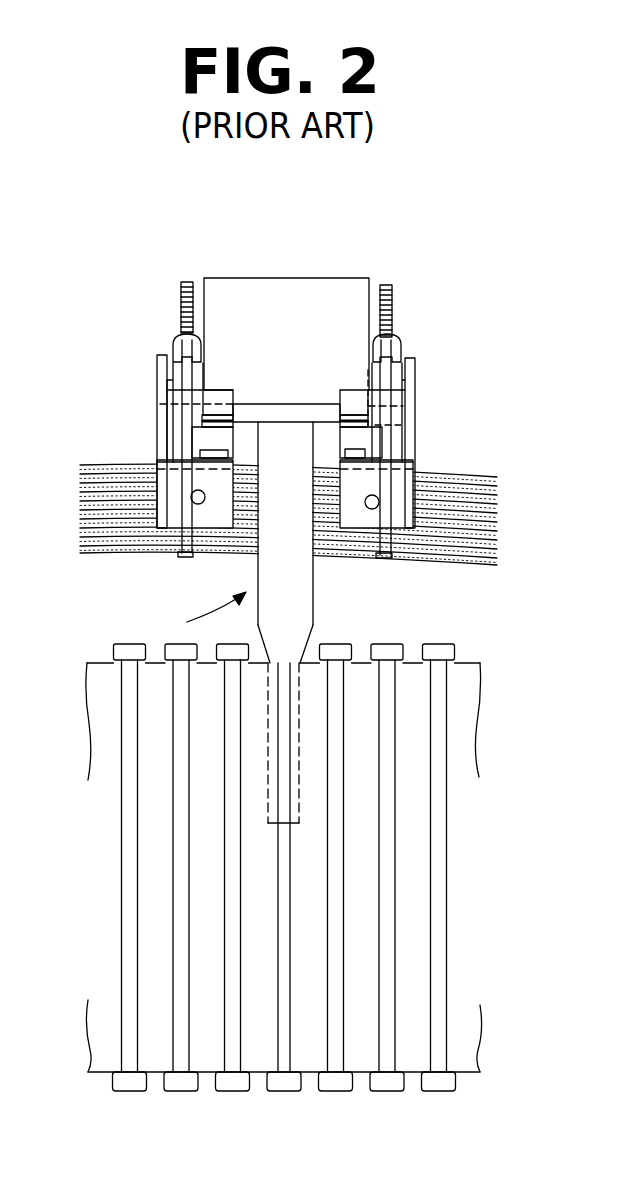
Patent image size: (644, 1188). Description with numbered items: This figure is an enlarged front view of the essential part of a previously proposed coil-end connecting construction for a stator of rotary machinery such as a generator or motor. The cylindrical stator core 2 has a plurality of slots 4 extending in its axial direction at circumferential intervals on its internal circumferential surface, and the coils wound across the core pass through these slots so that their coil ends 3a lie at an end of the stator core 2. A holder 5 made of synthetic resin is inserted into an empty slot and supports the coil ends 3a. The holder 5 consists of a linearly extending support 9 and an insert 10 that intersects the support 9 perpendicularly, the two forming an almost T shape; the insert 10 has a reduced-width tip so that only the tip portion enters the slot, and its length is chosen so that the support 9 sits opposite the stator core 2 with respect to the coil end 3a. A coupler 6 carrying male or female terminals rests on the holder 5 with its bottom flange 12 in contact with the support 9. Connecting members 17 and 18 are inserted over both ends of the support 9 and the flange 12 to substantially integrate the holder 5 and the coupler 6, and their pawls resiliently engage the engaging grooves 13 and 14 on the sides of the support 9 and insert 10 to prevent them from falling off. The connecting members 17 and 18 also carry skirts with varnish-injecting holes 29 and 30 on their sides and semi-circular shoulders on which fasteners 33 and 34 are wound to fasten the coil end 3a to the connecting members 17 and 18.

The stator core 2 is at (310, 1050).
The coil ends 3a is at (458, 560).
The slots 4 is at (279, 1003).
The holder 5 is at (204, 615).
The coupler 6 is at (260, 297).
The support 9 is at (325, 440).
The insert 10 is at (313, 621).
The flange 12 is at (280, 412).
The engaging groove 13 is at (353, 407).
The engaging groove 14 is at (250, 425).
The connecting member 17 is at (407, 397).
The connecting member 18 is at (165, 398).
The varnish-injecting hole 29 is at (372, 508).
The varnish-injecting hole 30 is at (198, 505).
The fastener 33 is at (385, 442).
The fastener 34 is at (180, 440).